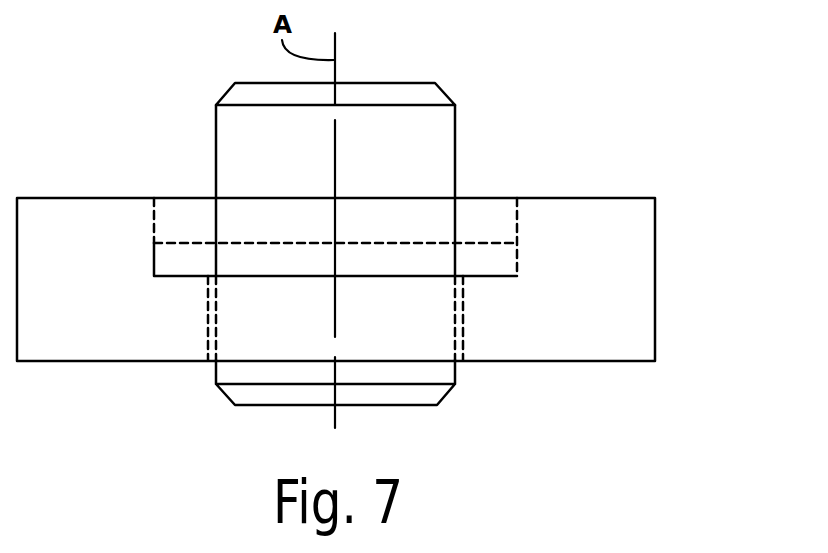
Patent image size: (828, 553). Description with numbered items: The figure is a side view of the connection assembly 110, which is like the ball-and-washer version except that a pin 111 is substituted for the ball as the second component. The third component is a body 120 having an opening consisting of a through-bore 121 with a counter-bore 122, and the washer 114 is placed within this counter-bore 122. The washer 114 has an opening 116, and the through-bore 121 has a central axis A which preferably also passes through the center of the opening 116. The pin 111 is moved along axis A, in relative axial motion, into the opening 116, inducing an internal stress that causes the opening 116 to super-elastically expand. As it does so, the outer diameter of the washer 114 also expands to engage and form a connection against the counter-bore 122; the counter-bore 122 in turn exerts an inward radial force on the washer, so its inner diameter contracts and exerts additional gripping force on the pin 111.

The connection assembly 110 is at (196, 40).
The pin 111 is at (435, 130).
The washer 114 is at (492, 258).
The opening 116 is at (216, 263).
The body 120 is at (632, 308).
The through-bore 121 is at (462, 332).
The counter-bore 122 is at (155, 219).